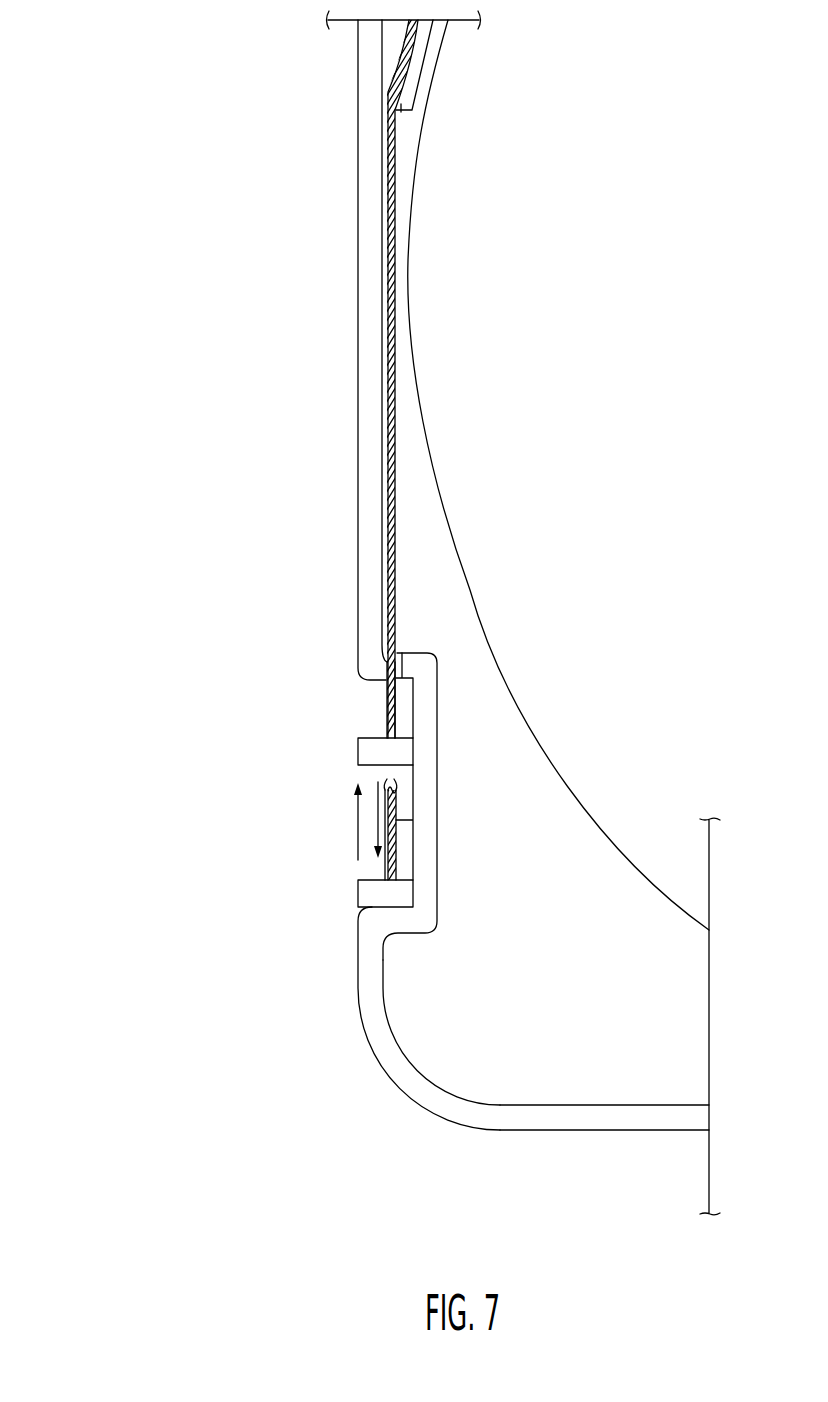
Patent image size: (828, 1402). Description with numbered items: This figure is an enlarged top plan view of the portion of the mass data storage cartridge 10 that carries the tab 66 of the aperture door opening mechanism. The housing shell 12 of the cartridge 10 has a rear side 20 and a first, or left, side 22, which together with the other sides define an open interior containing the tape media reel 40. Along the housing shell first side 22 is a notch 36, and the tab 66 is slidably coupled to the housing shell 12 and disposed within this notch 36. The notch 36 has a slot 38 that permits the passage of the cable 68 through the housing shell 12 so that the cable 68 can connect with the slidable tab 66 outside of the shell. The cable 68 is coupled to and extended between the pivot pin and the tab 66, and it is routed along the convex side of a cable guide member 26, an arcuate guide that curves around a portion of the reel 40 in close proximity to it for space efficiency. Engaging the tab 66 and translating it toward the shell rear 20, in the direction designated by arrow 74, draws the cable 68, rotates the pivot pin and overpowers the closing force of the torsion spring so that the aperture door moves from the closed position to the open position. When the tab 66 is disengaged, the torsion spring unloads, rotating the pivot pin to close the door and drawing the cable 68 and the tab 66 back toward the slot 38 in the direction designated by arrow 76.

The cartridge 10 is at (178, 115).
The housing shell 12 is at (482, 1052).
The rear side 20 is at (573, 1133).
The first side 22 is at (357, 478).
The cable guide member 26 is at (398, 114).
The notch 36 is at (437, 933).
The slot 38 is at (387, 682).
The reel 40 is at (500, 445).
The tab 66 is at (358, 745).
The cable 68 is at (388, 266).
The arrow 74 is at (377, 859).
The arrow 76 is at (355, 784).